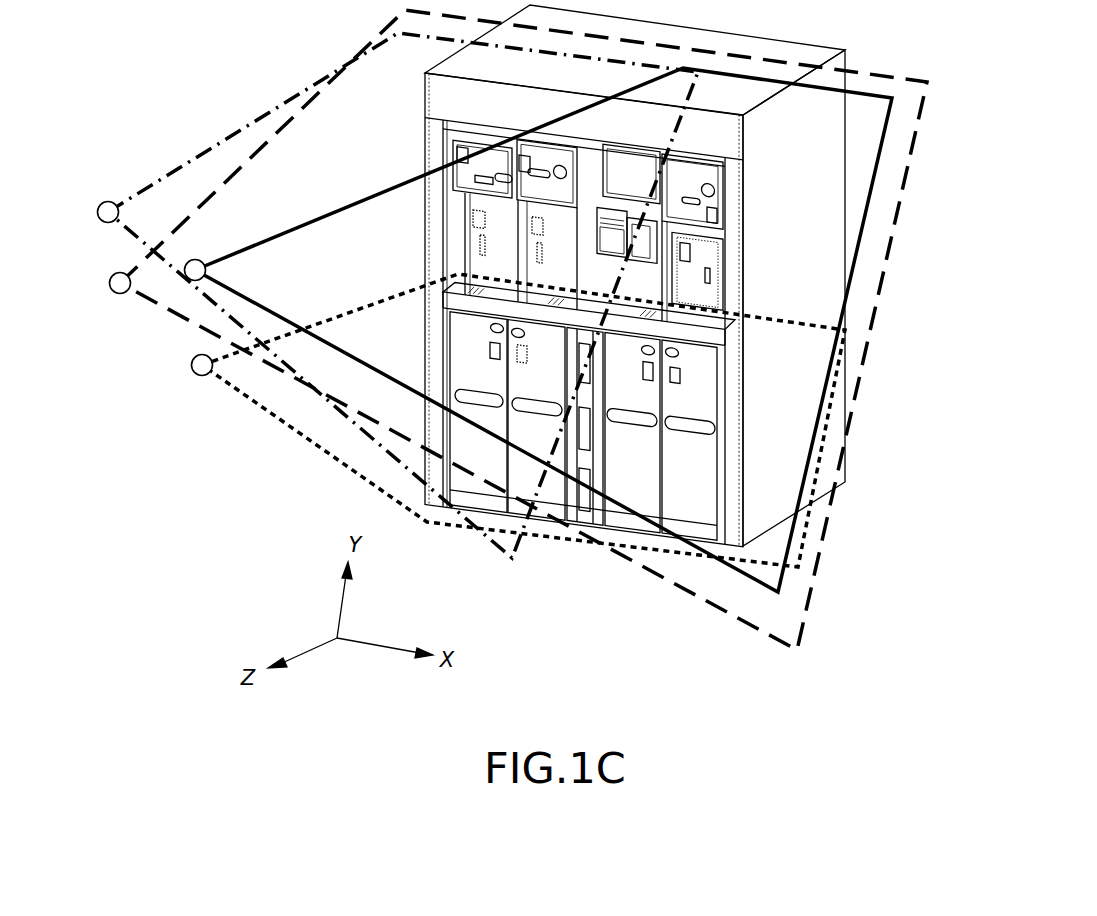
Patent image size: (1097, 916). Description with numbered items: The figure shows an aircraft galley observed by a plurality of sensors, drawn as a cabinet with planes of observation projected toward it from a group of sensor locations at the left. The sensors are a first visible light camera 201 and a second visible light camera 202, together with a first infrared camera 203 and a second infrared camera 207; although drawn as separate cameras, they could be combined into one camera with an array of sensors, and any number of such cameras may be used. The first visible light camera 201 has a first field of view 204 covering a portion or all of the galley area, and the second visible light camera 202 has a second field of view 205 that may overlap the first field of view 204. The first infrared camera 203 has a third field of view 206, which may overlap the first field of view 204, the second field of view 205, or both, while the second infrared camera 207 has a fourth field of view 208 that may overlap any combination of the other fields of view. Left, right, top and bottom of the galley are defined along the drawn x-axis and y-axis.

The first visible light camera 201 is at (101, 204).
The second visible light camera 202 is at (201, 261).
The first infrared camera 203 is at (118, 294).
The first field of view 204 is at (187, 163).
The second field of view 205 is at (325, 215).
The third field of view 206 is at (177, 315).
The second infrared camera 207 is at (196, 376).
The fourth field of view 208 is at (322, 452).